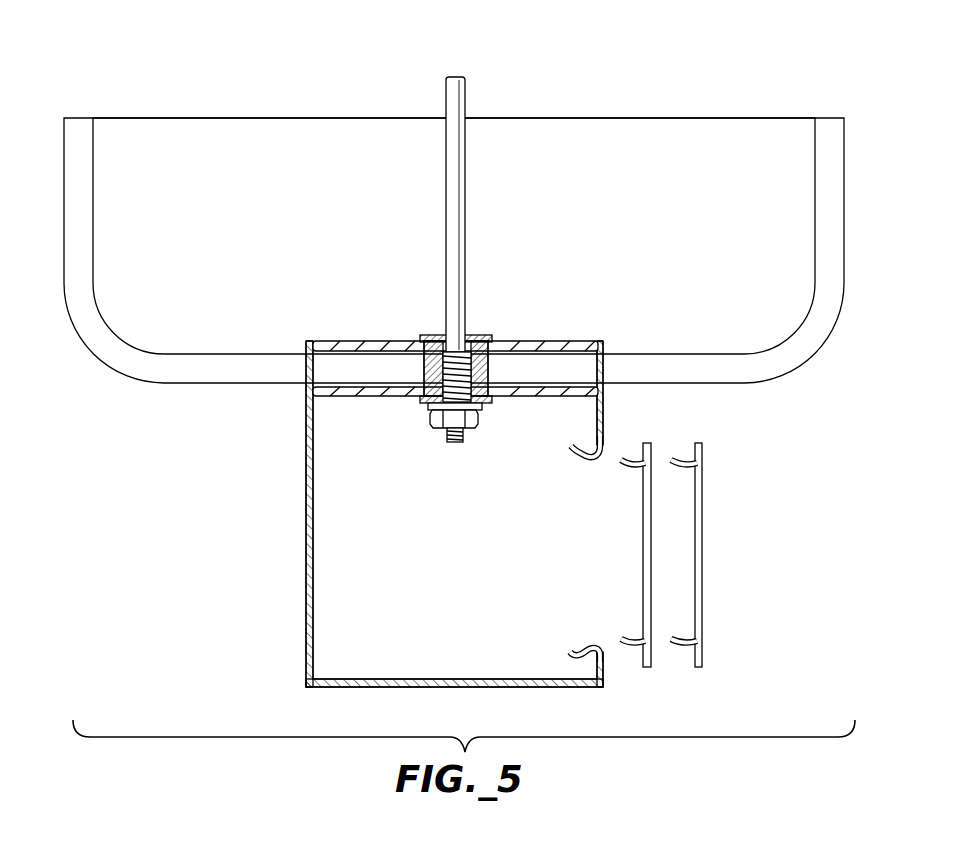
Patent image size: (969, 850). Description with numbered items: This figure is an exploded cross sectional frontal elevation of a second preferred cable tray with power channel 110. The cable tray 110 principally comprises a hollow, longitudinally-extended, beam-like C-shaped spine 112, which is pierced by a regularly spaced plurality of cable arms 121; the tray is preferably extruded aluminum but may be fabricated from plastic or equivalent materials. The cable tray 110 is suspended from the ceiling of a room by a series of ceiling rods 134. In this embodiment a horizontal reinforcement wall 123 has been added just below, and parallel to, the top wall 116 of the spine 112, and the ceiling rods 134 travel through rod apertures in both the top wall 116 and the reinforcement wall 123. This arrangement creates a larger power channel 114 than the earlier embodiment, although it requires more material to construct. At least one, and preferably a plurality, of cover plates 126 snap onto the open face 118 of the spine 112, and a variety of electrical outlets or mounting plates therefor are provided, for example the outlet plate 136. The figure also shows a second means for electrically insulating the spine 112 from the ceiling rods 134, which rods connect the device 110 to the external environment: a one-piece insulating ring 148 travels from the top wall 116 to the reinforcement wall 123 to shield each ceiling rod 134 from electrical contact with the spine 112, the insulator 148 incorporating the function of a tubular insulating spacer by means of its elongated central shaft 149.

The cable tray with power channel 110 is at (595, 68).
The spine 112 is at (325, 340).
The power channel 114 is at (348, 593).
The top wall 116 is at (588, 340).
The open face 118 is at (606, 667).
The cable arms 121 is at (818, 170).
The reinforcement wall 123 is at (503, 396).
The cover plates 126 is at (640, 526).
The ceiling rods 134 is at (455, 172).
The outlet plate 136 is at (704, 508).
The insulating ring 148 is at (483, 335).
The elongated central shaft 149 is at (490, 365).